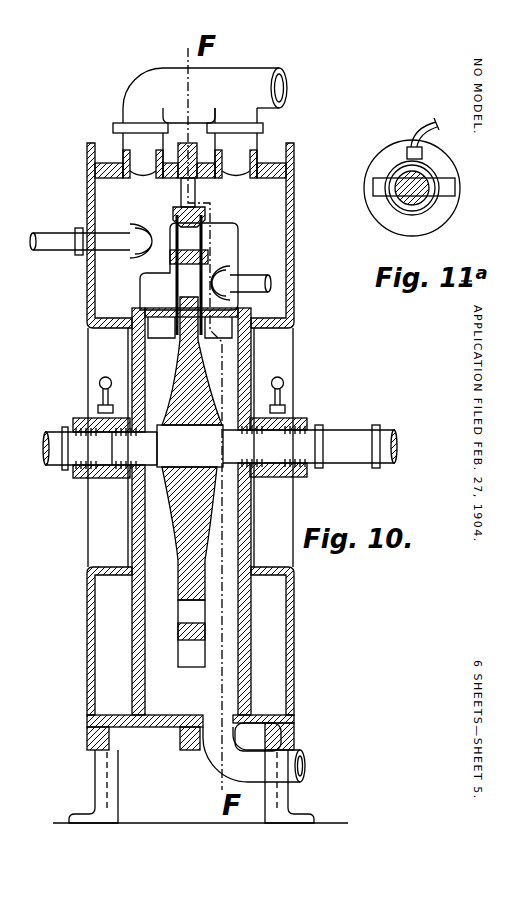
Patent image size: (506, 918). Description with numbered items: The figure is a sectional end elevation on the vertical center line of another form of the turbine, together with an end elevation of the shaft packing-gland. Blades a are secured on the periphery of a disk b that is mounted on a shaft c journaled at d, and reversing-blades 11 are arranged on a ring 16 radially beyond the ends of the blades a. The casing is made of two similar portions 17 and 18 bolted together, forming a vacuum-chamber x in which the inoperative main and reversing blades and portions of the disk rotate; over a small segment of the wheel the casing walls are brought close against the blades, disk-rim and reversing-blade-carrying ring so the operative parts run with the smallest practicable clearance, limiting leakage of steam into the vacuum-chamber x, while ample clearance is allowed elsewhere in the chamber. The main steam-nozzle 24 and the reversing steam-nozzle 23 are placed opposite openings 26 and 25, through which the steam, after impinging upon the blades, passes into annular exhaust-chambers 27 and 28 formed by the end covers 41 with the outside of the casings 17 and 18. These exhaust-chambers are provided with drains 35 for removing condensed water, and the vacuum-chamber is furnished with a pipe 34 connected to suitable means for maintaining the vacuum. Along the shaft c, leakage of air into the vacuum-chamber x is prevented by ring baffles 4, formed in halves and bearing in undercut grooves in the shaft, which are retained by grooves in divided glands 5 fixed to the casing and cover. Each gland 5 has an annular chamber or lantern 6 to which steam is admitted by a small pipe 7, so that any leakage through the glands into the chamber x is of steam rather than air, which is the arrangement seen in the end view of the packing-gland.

In FIG. 10, the end cover 41 is at (87, 200).
In FIG. 10, the reversing steam-nozzle 23 is at (91, 225).
In FIG. 10, the annular exhaust-chamber 28 is at (266, 450).
In FIG. 10, the opening 25 is at (205, 240).
In FIG. 10, the main steam-nozzle 24 is at (232, 272).
In FIG. 10, the ring 16 is at (145, 280).
In FIG. 10, the annular exhaust-chamber 27 is at (109, 500).
In FIG. 10, the reversing-blades 11 is at (182, 660).
In FIG. 10, the opening 26 is at (172, 318).
In FIG. 10, the casing portion 17 is at (130, 366).
In FIG. 10, the casing portion 18 is at (251, 343).
In FIG. 10, the small pipe 7 is at (99, 392).
In FIG. 11A, the small pipe 7 is at (425, 118).
In FIG. 10, the divided gland 5 is at (290, 419).
In FIG. 11A, the divided gland 5 is at (387, 172).
In FIG. 10, the annular chamber or lantern 6 is at (115, 440).
In FIG. 10, the ring baffles 4 is at (118, 479).
In FIG. 10, the drain 35 is at (87, 712).
In FIG. 10, the pipe 34 is at (268, 768).
In FIG. 10, the blades a is at (185, 279).
In FIG. 10, the disk b is at (189, 456).
In FIG. 10, the shaft c is at (190, 446).
In FIG. 10, the journal d is at (352, 462).
In FIG. 11A, the journal d is at (412, 202).
In FIG. 10, the vacuum-chamber x is at (178, 620).